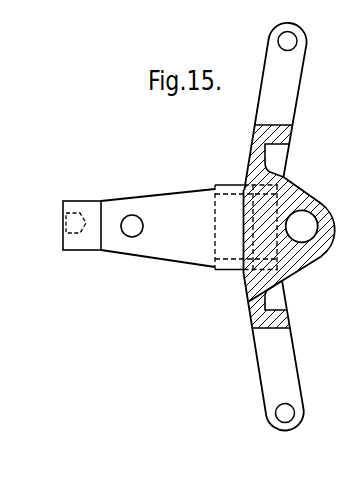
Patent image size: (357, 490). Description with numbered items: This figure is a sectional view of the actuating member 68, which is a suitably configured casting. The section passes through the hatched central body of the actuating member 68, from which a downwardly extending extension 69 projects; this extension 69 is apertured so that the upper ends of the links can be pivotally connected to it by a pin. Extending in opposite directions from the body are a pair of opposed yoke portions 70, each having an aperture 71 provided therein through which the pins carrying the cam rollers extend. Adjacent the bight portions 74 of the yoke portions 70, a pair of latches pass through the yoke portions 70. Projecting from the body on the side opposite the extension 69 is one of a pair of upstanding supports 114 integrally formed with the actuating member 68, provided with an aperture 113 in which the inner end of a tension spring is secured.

The actuating member 68 is at (247, 308).
The downwardly extending extension 69 is at (306, 258).
The yoke portions 70 is at (264, 62).
The apertures 71 is at (278, 41).
The bight portions 74 is at (263, 125).
The apertures 113 is at (143, 226).
The upstanding supports 114 is at (171, 257).